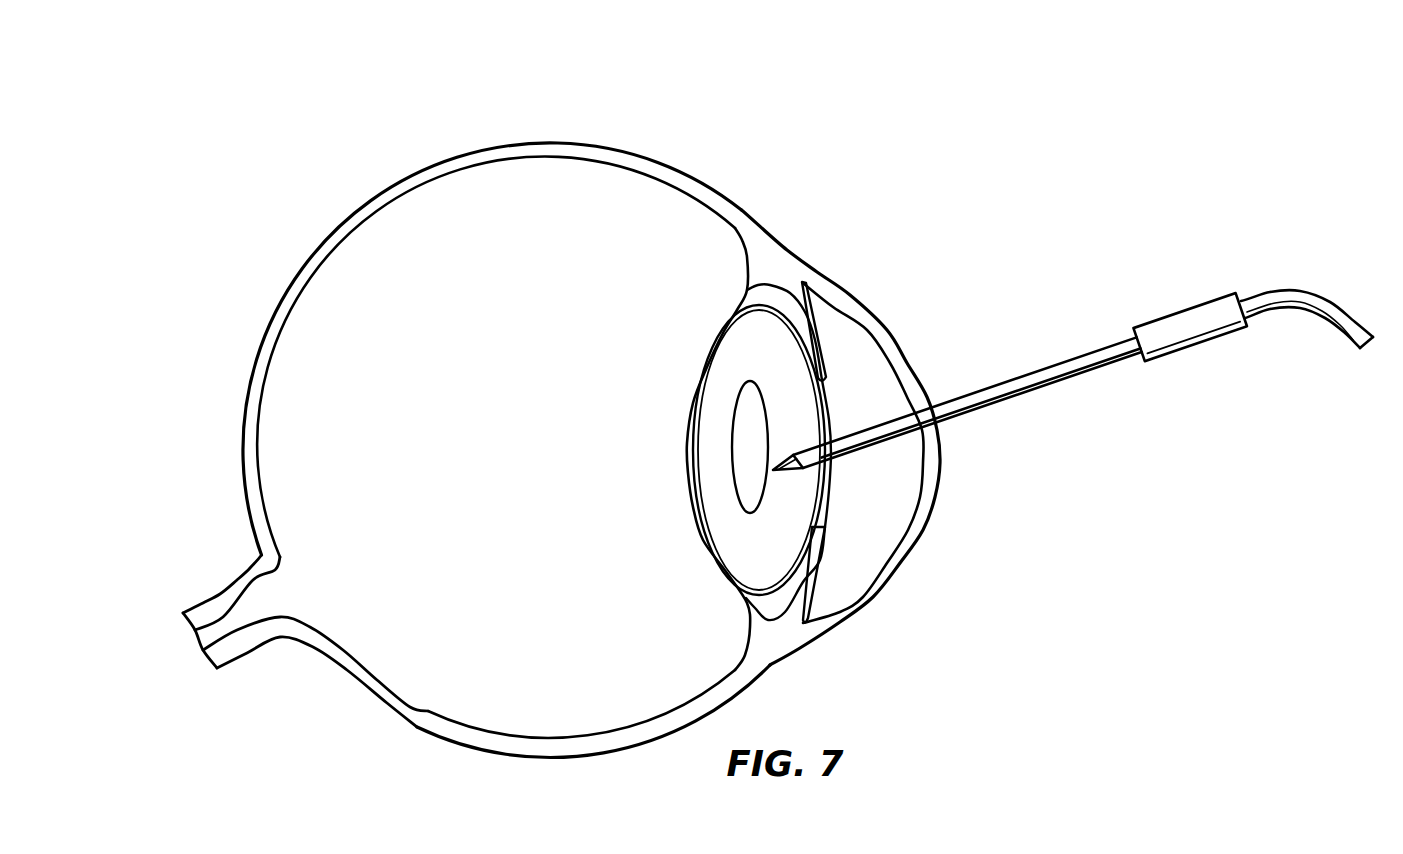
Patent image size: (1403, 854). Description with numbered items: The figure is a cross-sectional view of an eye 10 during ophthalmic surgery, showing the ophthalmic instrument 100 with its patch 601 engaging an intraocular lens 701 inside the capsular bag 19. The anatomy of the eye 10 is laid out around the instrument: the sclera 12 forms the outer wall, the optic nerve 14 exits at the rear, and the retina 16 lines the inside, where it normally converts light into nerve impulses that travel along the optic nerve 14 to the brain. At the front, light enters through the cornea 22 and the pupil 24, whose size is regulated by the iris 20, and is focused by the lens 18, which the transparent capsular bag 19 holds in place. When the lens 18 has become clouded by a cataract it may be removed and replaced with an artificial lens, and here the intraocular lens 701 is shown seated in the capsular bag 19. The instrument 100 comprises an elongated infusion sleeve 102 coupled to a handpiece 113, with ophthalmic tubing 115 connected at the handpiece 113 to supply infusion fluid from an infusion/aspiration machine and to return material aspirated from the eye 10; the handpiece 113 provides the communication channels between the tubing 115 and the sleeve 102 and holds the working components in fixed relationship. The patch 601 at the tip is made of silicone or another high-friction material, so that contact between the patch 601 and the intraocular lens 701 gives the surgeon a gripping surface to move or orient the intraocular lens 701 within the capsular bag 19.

The eye 10 is at (815, 133).
The sclera 12 is at (388, 190).
The optic nerve 14 is at (245, 658).
The retina 16 is at (424, 718).
The lens 18 is at (702, 378).
The capsular bag 19 is at (683, 448).
The iris 20 is at (827, 553).
The cornea 22 is at (913, 357).
The pupil 24 is at (887, 490).
The instrument 100 is at (1136, 412).
The elongated infusion sleeve 102 is at (1047, 366).
The handpiece 113 is at (1183, 308).
The ophthalmic tubing 115 is at (1300, 291).
The patch 601 is at (775, 473).
The intraocular lens (IOL) 701 is at (747, 490).